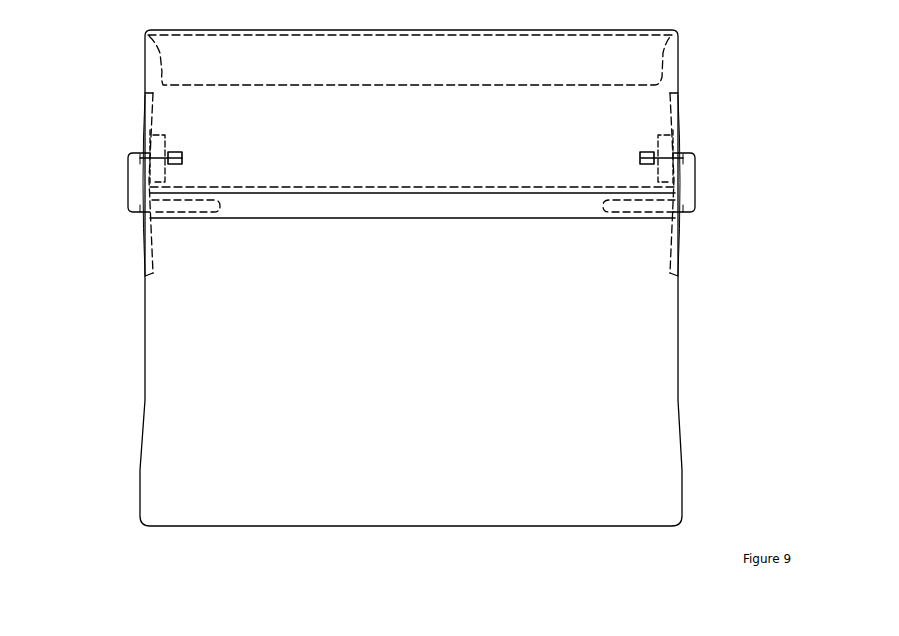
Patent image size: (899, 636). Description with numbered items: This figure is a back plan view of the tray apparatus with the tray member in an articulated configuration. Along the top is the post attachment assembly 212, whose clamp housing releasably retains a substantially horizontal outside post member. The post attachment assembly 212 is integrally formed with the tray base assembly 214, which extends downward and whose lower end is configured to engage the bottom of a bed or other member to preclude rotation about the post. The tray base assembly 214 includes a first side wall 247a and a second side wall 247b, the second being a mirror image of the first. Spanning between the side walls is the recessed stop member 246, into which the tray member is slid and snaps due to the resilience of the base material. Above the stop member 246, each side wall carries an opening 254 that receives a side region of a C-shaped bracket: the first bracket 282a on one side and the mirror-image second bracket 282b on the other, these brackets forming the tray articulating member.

The post attachment assembly 212 is at (523, 68).
The tray base assembly 214 is at (593, 459).
The recessed stop member 246 is at (505, 205).
The first side wall 247a is at (138, 243).
The second side wall 247b is at (677, 247).
The opening 254 is at (143, 153).
The first bracket 282a is at (127, 187).
The second bracket 282b is at (690, 180).